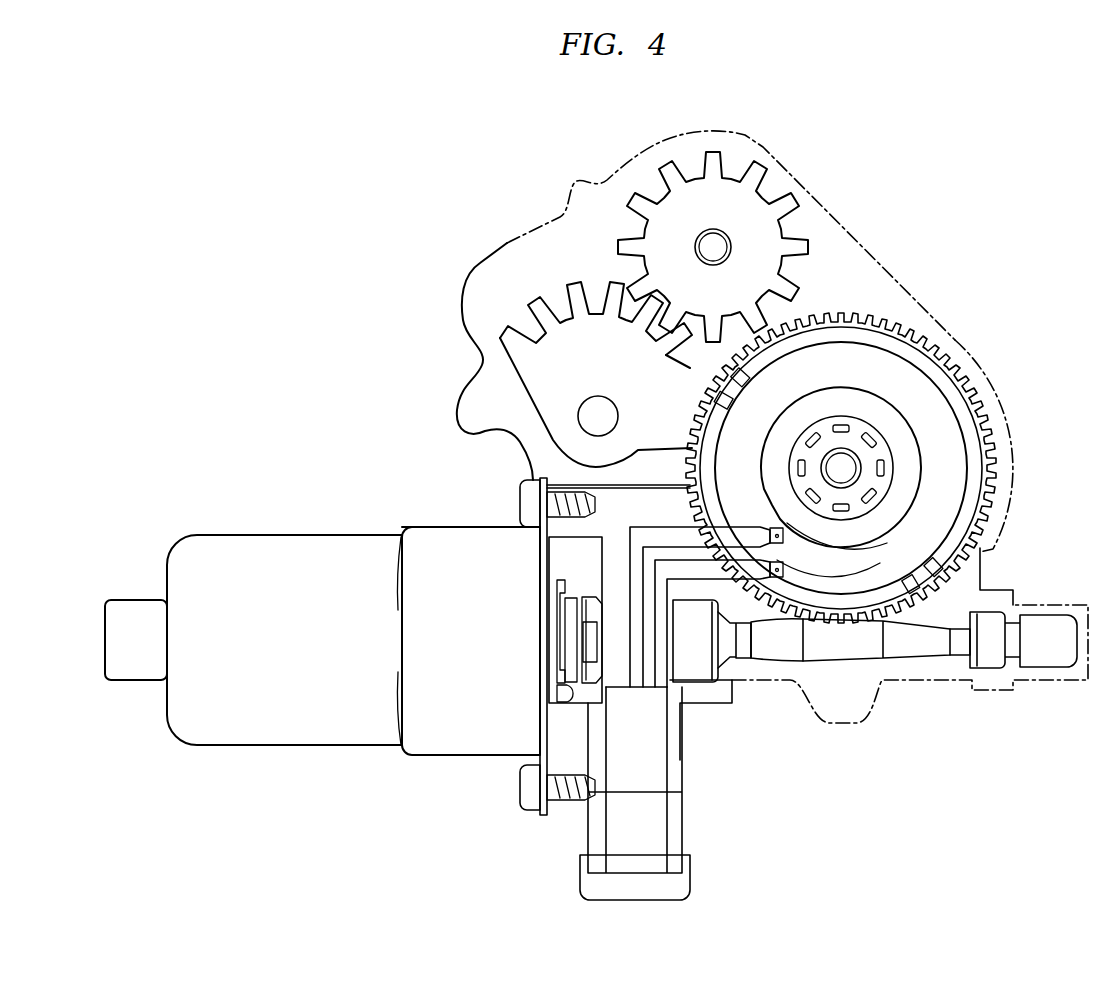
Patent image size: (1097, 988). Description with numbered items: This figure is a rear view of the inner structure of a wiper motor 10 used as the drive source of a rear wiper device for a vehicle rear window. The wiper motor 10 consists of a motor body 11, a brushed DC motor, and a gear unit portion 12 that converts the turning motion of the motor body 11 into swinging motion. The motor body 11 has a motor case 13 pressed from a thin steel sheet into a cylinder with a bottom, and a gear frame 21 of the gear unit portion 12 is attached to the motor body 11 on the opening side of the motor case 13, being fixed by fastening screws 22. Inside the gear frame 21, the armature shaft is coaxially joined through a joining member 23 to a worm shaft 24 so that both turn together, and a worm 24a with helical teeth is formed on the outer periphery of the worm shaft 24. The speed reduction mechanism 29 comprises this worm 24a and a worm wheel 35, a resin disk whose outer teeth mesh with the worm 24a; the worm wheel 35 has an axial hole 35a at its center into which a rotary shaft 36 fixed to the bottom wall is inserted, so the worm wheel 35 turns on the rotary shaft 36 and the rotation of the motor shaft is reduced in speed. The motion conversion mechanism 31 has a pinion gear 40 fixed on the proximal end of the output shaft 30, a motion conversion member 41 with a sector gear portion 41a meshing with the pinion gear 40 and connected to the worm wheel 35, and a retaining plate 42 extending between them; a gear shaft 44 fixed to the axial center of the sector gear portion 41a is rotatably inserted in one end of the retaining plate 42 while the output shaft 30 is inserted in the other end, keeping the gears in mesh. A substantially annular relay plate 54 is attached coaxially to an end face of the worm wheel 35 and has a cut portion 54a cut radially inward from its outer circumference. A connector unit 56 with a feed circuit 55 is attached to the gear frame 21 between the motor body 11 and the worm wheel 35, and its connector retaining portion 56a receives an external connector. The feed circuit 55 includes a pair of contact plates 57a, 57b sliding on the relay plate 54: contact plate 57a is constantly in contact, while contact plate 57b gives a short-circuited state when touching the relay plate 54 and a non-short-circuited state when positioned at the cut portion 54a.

The wiper motor 10 is at (242, 257).
The motor body 11 is at (258, 531).
The gear unit portion 12 is at (1031, 313).
The motor case 13 is at (236, 723).
The gear frame 21 is at (898, 688).
The fastening screws 22 is at (527, 505).
The joining member 23 is at (593, 657).
The worm shaft 24 is at (763, 648).
The worm 24a is at (847, 647).
The speed reduction mechanism 29 is at (953, 602).
The output shaft 30 is at (720, 248).
The motion conversion mechanism 31 is at (592, 256).
The worm wheel 35 is at (937, 318).
The axial hole 35a is at (862, 466).
The rotary shaft 36 is at (868, 475).
The pinion gear 40 is at (742, 190).
The motion conversion member 41 is at (540, 440).
The sector gear portion 41a is at (552, 338).
The retaining plate 42 is at (700, 357).
The gear shaft 44 is at (592, 416).
The relay plate 54 is at (947, 476).
The cut portion 54a is at (780, 617).
The feed circuit 55 is at (622, 640).
The connector unit 56 is at (692, 823).
The connector retaining portion 56a is at (668, 888).
The contact plate 57a is at (777, 545).
The contact plate 57b is at (775, 570).